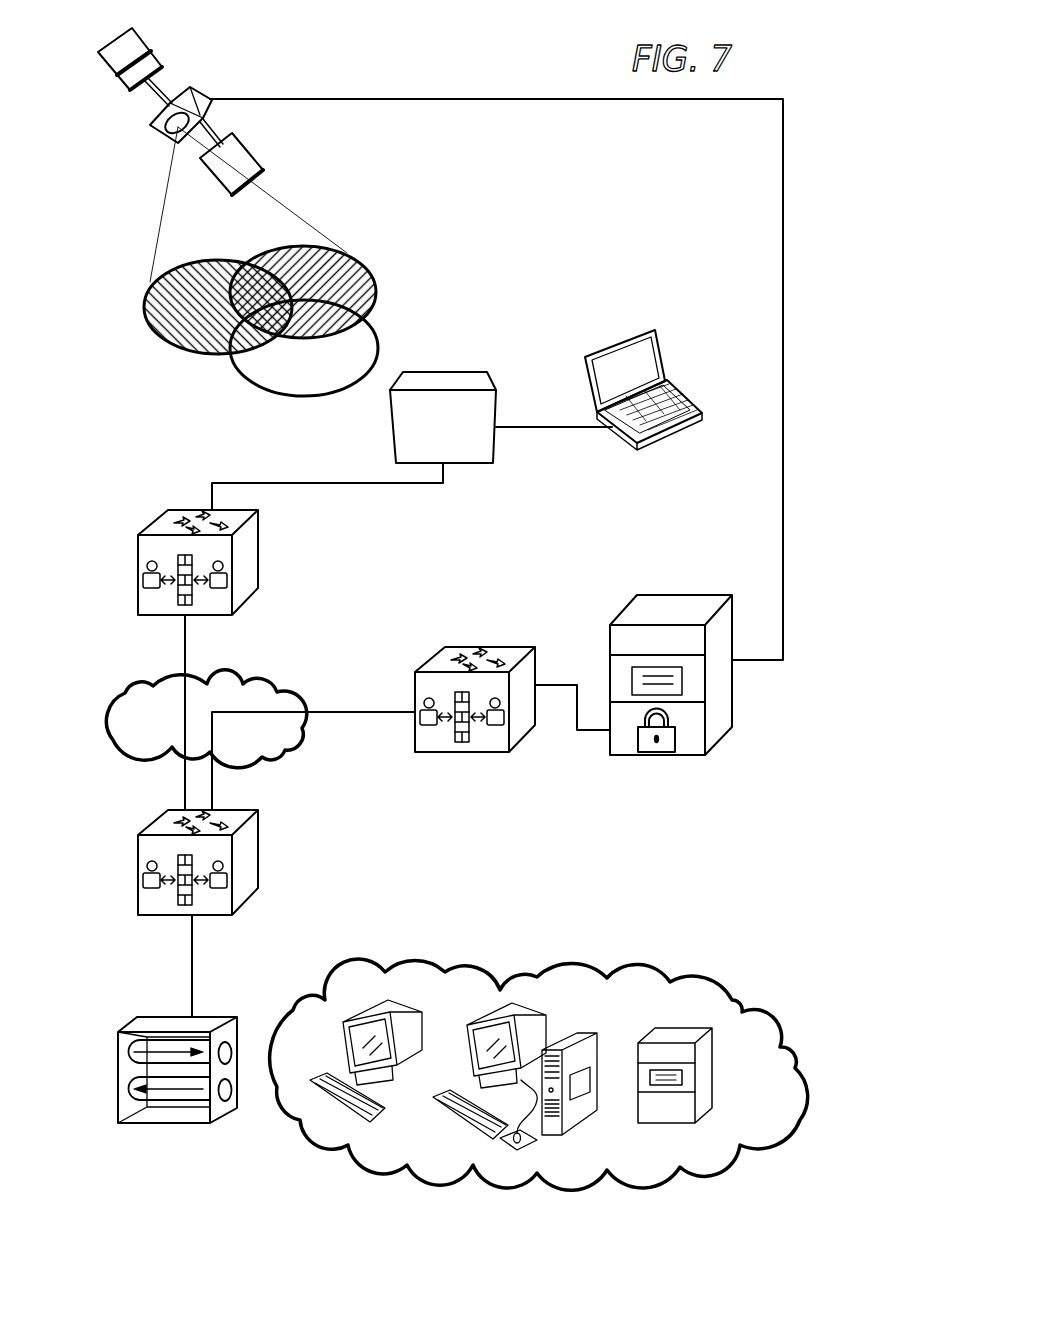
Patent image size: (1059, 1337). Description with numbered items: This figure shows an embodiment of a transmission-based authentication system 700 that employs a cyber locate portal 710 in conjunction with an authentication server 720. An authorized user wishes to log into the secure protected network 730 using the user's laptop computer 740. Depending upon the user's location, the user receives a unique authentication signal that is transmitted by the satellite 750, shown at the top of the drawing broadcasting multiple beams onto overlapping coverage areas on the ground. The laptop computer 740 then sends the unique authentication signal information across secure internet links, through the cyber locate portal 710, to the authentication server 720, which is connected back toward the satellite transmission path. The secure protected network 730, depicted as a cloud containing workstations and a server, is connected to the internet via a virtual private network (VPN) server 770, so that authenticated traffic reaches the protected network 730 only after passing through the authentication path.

The transmission-based authentication system 700 is at (270, 1143).
The cyber locate portal 710 is at (480, 463).
The authentication server 720 is at (673, 595).
The secure protected network 730 is at (733, 990).
The laptop computer 740 is at (621, 342).
The satellite 750 is at (208, 92).
The virtual private network (VPN) server 770 is at (157, 1020).